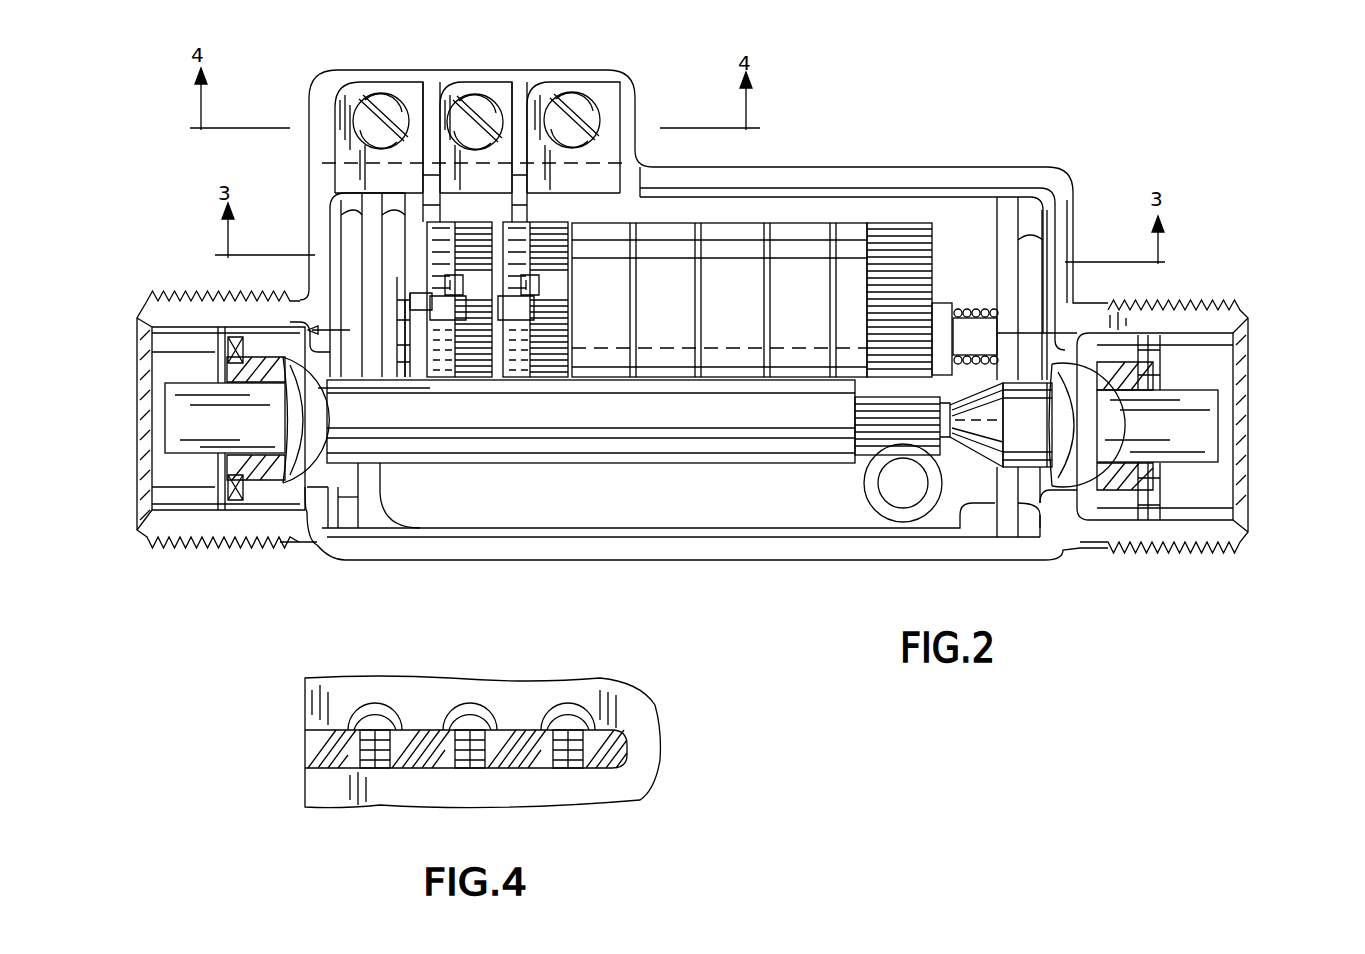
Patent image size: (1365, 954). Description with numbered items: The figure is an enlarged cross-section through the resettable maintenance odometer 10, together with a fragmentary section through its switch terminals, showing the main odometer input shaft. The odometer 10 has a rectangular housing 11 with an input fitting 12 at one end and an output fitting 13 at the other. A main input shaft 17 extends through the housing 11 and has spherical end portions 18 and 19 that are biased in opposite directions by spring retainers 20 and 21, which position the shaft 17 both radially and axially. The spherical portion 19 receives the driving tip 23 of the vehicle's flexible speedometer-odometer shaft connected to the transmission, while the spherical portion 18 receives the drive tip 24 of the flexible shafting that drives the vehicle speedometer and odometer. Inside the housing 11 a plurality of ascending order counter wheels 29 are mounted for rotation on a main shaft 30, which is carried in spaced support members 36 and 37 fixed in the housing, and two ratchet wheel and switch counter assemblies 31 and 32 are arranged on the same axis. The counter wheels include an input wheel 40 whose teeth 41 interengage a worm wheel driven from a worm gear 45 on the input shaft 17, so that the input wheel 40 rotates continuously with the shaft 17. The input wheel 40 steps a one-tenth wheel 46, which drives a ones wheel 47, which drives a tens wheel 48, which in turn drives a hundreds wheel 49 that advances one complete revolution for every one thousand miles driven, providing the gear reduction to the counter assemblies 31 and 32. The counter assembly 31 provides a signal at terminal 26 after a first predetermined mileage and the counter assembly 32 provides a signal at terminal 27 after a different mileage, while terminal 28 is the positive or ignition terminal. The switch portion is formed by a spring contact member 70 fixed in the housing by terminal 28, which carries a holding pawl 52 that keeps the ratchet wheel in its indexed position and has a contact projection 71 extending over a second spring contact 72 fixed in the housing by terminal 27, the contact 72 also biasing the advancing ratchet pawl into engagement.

In FIG. 2, the resettable maintenance odometer 10 is at (876, 153).
In FIG. 2, the housing 11 is at (858, 182).
In FIG. 2, the input fitting 12 is at (1212, 315).
In FIG. 2, the output fitting 13 is at (192, 316).
In FIG. 2, the main input shaft 17 is at (575, 448).
In FIG. 2, the spherical end portion 18 is at (264, 482).
In FIG. 2, the spherical end portion 19 is at (1140, 345).
In FIG. 2, the spring retainer 20 is at (218, 482).
In FIG. 2, the spring retainer 21 is at (1162, 360).
In FIG. 2, the driving tip 23 is at (1212, 418).
In FIG. 2, the drive tip 24 is at (186, 415).
In FIG. 2, the terminal 26 is at (580, 92).
In FIG. 4, the terminal 26 is at (570, 718).
In FIG. 2, the terminal 27 is at (387, 90).
In FIG. 4, the terminal 27 is at (372, 718).
In FIG. 2, the positive or ignition terminal 28 is at (472, 90).
In FIG. 4, the positive or ignition terminal 28 is at (470, 718).
In FIG. 2, the counter wheels 29 is at (764, 212).
In FIG. 2, the main shaft 30 is at (975, 332).
In FIG. 2, the ratchet wheel and switch counter assembly 31 is at (506, 426).
In FIG. 2, the ratchet wheel and switch counter assembly 32 is at (437, 424).
In FIG. 2, the support member 36 is at (372, 216).
In FIG. 2, the support member 37 is at (1012, 236).
In FIG. 2, the input wheel 40 is at (940, 250).
In FIG. 2, the teeth 41 is at (895, 250).
In FIG. 2, the worm gear 45 is at (888, 434).
In FIG. 2, the 1/10 wheel 46 is at (802, 250).
In FIG. 2, the ones wheel 47 is at (737, 250).
In FIG. 2, the tens wheel 48 is at (668, 250).
In FIG. 2, the hundreds wheel 49 is at (612, 245).
In FIG. 2, the holding pawl 52 is at (458, 325).
In FIG. 2, the spring contact member 70 is at (448, 245).
In FIG. 2, the contact projection 71 is at (420, 302).
In FIG. 2, the second spring contact 72 is at (376, 316).